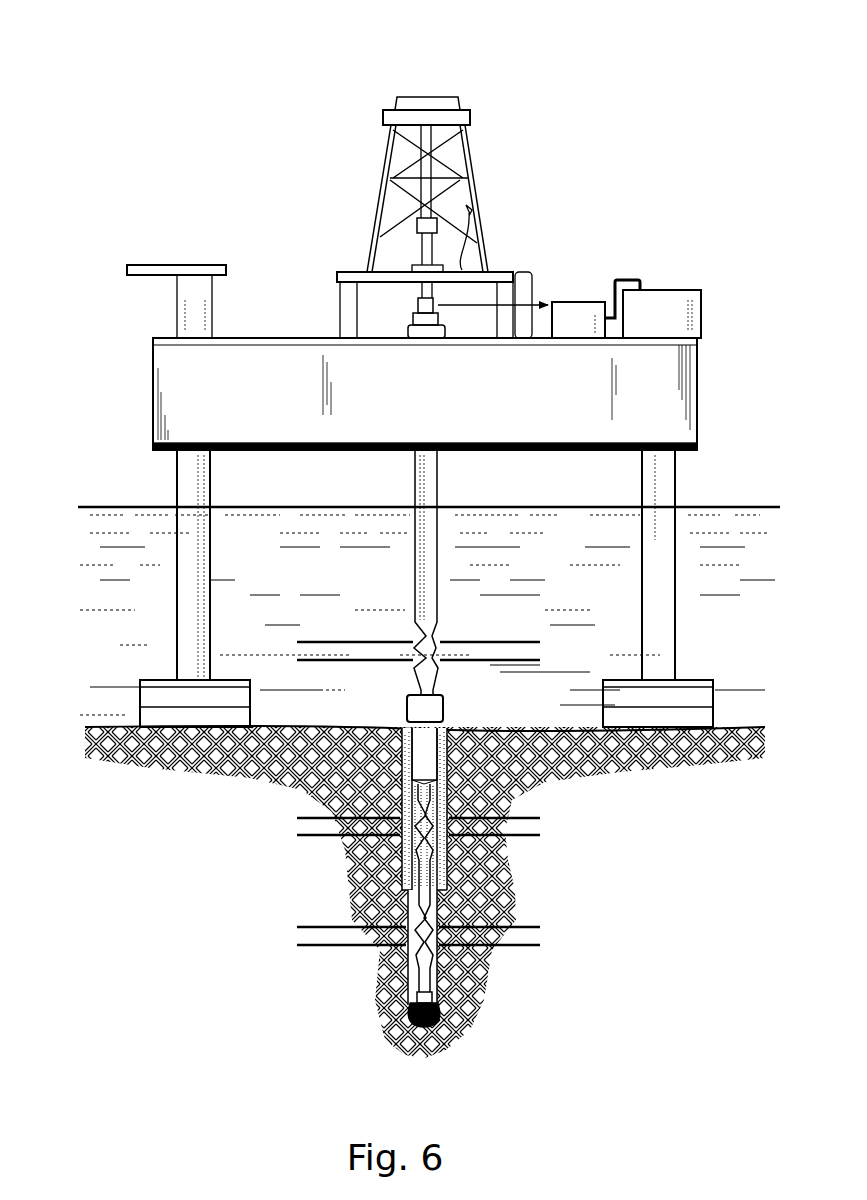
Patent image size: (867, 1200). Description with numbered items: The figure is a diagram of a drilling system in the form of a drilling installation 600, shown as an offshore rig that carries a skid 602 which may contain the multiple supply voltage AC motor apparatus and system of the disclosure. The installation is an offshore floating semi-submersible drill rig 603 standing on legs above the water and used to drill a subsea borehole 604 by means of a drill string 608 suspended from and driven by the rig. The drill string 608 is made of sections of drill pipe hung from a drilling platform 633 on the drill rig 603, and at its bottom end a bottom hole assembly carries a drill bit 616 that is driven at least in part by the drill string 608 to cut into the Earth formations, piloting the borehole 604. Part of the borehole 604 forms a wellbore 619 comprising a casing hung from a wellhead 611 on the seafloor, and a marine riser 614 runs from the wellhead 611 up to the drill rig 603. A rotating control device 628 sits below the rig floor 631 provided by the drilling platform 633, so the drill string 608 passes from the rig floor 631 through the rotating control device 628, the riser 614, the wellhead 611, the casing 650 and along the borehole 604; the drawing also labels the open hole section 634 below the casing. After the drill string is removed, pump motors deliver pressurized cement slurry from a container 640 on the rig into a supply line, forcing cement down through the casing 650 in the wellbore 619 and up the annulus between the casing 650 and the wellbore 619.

The drilling installation 600 is at (650, 68).
The skid 602 is at (575, 302).
The drill rig 603 is at (153, 377).
The borehole 604 is at (442, 913).
The drill string 608 is at (427, 972).
The wellhead 611 is at (432, 713).
The marine riser 614 is at (430, 488).
The drill bit 616 is at (408, 1018).
The wellbore 619 is at (455, 787).
The rotating control device 628 is at (420, 302).
The rig floor 631 is at (398, 267).
The drilling platform 633 is at (478, 148).
The wellbore 634 is at (406, 912).
The container 640 is at (680, 330).
The casing 650 is at (418, 757).